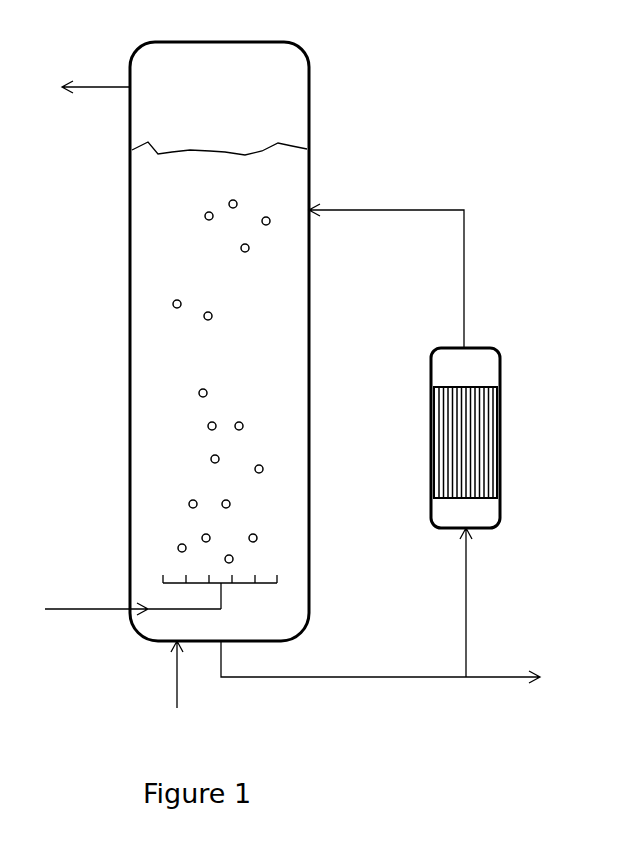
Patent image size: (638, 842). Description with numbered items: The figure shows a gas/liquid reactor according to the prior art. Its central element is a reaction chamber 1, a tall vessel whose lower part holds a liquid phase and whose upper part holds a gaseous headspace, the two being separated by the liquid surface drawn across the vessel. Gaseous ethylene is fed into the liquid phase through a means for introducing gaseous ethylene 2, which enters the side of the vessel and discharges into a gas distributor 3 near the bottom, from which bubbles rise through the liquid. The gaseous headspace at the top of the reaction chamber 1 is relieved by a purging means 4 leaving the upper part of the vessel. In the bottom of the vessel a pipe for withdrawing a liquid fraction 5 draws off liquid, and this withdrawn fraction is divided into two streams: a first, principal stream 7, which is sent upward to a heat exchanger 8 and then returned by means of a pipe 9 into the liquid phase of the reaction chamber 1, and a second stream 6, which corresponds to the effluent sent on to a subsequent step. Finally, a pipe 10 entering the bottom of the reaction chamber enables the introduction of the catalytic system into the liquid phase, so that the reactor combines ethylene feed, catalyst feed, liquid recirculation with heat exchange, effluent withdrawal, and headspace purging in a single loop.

The reaction chamber 1 is at (130, 362).
The means for introducing gaseous ethylene 2 is at (78, 608).
The gas distributor 3 is at (166, 577).
The purging means 4 is at (101, 86).
The pipe for withdrawing a liquid fraction 5 is at (360, 677).
The second stream 6 is at (512, 677).
The first principal stream 7 is at (465, 587).
The heat exchanger 8 is at (447, 348).
The pipe 9 is at (333, 212).
The pipe for introducing the catalytic system 10 is at (175, 673).